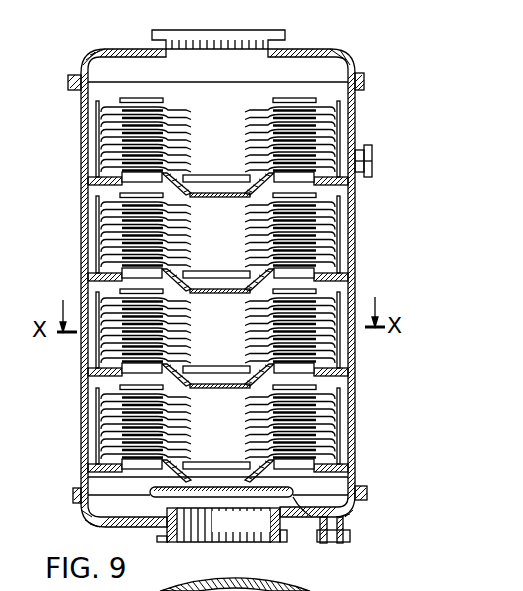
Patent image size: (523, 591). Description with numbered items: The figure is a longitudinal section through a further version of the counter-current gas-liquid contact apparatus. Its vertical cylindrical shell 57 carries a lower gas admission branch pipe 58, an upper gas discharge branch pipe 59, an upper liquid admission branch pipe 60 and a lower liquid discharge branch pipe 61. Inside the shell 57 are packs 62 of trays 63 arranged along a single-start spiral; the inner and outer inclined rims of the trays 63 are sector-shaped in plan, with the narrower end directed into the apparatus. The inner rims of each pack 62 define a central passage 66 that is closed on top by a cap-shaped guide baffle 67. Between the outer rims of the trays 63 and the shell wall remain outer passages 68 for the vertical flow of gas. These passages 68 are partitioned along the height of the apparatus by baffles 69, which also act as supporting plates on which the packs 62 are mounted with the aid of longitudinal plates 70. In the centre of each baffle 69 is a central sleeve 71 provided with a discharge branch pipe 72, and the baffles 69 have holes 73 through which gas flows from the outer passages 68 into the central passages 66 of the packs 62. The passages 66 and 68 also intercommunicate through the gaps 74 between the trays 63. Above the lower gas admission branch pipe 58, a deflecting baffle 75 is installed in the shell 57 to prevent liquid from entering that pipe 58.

The vertical cylindrical shell 57 is at (357, 400).
The lower gas admission branch pipe 58 is at (280, 543).
The upper gas discharge branch pipe 59 is at (284, 36).
The upper liquid admission branch pipe 60 is at (372, 167).
The lower liquid discharge branch pipe 61 is at (323, 540).
The pack of trays 62 is at (190, 128).
The tray 63 is at (328, 100).
The central passage 66 is at (297, 122).
The guide baffle 67 is at (122, 390).
The outer passage 68 is at (345, 120).
The baffle 69 is at (350, 278).
The longitudinal plate 70 is at (340, 250).
The central sleeve 71 is at (208, 293).
The discharge branch pipe 72 is at (157, 487).
The hole 73 is at (310, 180).
The gap 74 is at (258, 131).
The deflecting baffle 75 is at (306, 523).